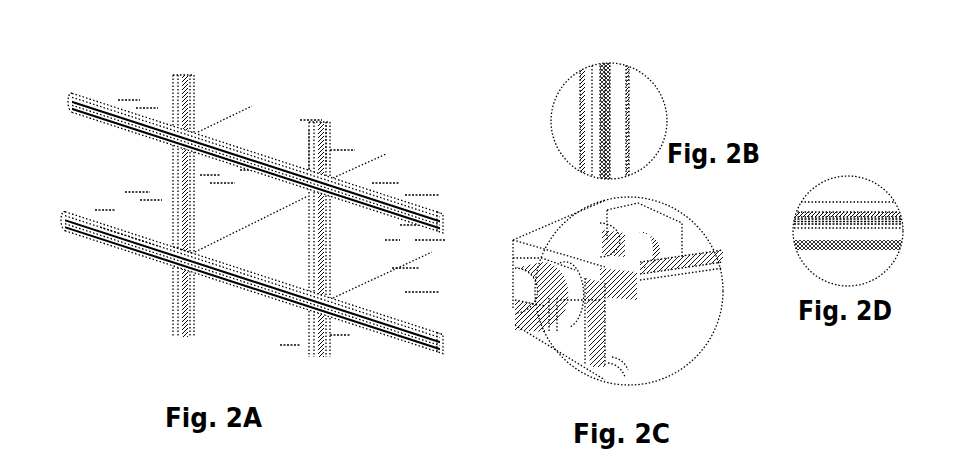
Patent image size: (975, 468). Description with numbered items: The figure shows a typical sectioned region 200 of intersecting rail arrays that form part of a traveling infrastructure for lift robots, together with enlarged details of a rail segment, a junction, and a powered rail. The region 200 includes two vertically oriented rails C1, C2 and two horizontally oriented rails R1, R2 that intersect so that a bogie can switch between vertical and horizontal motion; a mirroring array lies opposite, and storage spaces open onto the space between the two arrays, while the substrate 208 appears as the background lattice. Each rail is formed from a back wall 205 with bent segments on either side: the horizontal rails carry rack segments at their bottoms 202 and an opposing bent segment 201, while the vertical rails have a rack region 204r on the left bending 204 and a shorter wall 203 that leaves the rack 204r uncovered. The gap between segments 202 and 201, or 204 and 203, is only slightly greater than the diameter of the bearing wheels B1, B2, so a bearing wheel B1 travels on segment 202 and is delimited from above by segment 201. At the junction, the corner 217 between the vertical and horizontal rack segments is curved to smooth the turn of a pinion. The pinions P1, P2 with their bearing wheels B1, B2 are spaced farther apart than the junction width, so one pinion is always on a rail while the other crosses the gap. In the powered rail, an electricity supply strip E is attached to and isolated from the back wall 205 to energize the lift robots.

In FIG. 2A, the sectioned region 200 is at (133, 341).
In FIG. 2A, the bent segment of horizontal rail 201 is at (440, 216).
In FIG. 2D, the bent segment of horizontal rail 201 is at (812, 208).
In FIG. 2C, the bent segment of horizontal rail 201 is at (672, 228).
In FIG. 2A, the bottom of horizontal rail 202 is at (432, 232).
In FIG. 2C, the bottom of horizontal rail 202 is at (530, 338).
In FIG. 2A, the bent segment of vertical rail 203 is at (310, 148).
In FIG. 2B, the bent segment of vertical rail 203 is at (583, 112).
In FIG. 2A, the left bending of vertical rail 204 is at (326, 142).
In FIG. 2B, the left bending of vertical rail 204 is at (622, 117).
In FIG. 2C, the left bending of vertical rail 204 is at (607, 365).
In FIG. 2B, the rack segment of vertical rail 204r is at (607, 90).
In FIG. 2A, the back wall 205 is at (120, 242).
In FIG. 2B, the back wall 205 is at (598, 72).
In FIG. 2D, the back wall 205 is at (896, 232).
In FIG. 2A, the substrate 208 is at (301, 269).
In FIG. 2A, the corner 217 is at (188, 268).
In FIG. 2C, the corner 217 is at (627, 318).
In FIG. 2A, the horizontally oriented rail R1 is at (68, 104).
In FIG. 2A, the horizontally oriented rail R2 is at (62, 213).
In FIG. 2A, the vertically oriented rail C1 is at (190, 68).
In FIG. 2A, the vertically oriented rail C2 is at (323, 114).
In FIG. 2C, the pinion P1 is at (532, 315).
In FIG. 2C, the pinion P2 is at (643, 242).
In FIG. 2C, the bearing wheel B1 is at (565, 317).
In FIG. 2C, the bearing wheel B2 is at (667, 262).
In FIG. 2D, the electricity supply strip E is at (800, 225).